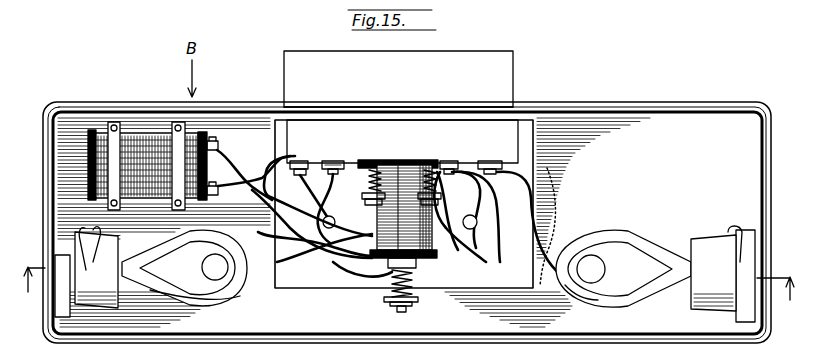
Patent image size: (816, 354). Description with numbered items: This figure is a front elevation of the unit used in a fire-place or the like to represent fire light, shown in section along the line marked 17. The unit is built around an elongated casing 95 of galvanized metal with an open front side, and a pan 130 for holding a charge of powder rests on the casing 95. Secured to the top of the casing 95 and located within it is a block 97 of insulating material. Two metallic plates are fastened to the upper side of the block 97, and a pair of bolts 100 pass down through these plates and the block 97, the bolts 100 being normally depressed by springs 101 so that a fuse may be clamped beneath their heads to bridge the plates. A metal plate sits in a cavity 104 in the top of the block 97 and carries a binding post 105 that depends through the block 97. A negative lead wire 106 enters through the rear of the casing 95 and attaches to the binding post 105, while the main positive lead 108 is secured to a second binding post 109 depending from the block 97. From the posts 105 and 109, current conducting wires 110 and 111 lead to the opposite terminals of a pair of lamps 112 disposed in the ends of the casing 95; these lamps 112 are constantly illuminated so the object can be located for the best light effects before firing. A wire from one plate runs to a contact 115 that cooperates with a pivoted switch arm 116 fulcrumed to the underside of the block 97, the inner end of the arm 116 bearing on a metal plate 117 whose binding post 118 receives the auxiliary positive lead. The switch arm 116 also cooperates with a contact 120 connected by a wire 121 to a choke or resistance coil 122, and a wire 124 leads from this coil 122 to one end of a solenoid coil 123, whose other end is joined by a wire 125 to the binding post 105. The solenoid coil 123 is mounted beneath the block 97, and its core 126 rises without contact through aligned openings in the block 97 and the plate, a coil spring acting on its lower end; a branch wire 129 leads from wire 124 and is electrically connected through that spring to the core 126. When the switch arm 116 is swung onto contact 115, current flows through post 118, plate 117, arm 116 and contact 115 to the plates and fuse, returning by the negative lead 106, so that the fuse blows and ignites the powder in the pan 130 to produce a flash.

The section line 17- 17 is at (407, 274).
The casing 95 is at (600, 92).
The block 97 is at (506, 130).
The bolts 100 is at (380, 214).
The springs 101 is at (447, 161).
The cavity 104 is at (480, 288).
The binding post 105 is at (472, 161).
The negative lead wire 106 is at (502, 262).
The main positive lead 108 is at (502, 250).
The second binding post 109 is at (512, 242).
The current conducting wire 110 is at (263, 240).
The current conducting wire 111 is at (566, 232).
The lamps 112 is at (627, 240).
The contact 115 is at (296, 187).
The switch arm 116 is at (340, 161).
The metal plate 117 is at (341, 208).
The binding post 118 is at (270, 292).
The contact 120 is at (298, 161).
The wire 121 is at (266, 168).
The choke or resistance coil 122 is at (136, 152).
The solenoid coil 123 is at (388, 258).
The wire 124 is at (324, 256).
The wire 125 is at (481, 290).
The core 126 is at (416, 274).
The branch wire 129 is at (346, 265).
The pan 130 is at (398, 79).